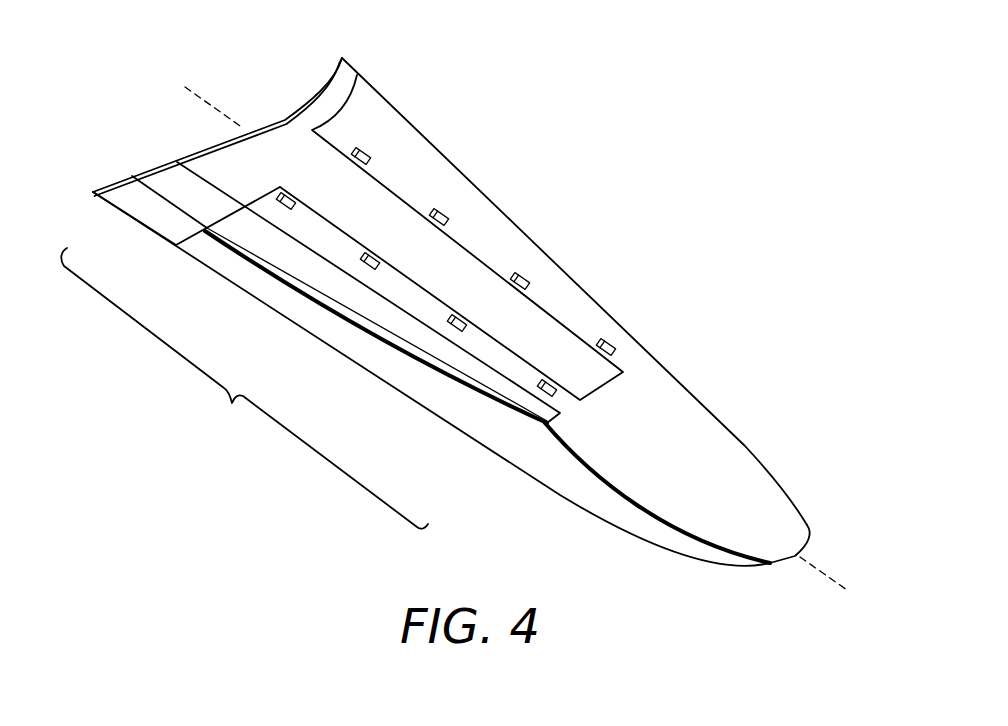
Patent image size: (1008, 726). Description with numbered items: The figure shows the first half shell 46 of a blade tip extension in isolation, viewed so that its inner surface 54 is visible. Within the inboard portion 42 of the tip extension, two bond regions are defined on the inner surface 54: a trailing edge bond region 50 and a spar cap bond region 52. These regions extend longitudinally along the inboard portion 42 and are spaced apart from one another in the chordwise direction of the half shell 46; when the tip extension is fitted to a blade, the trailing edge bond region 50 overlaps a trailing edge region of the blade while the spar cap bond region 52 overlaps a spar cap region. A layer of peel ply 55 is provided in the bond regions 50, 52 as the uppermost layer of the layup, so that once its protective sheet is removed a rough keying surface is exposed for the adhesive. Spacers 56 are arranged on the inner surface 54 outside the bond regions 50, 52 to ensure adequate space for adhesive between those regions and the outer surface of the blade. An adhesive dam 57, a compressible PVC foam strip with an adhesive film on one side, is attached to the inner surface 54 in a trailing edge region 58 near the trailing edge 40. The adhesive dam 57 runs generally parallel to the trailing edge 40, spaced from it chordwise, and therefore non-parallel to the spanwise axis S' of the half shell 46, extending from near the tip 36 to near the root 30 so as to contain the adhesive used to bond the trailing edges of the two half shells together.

The root 30 is at (285, 112).
The tip 36 is at (742, 565).
The trailing edge 40 is at (126, 214).
The inboard portion 42 is at (244, 388).
The first half shell 46 is at (570, 175).
The trailing edge bond region 50 is at (293, 263).
The spar cap bond region 52 is at (379, 205).
The inner surface 54 is at (220, 168).
The peel ply layer 55 is at (179, 157).
The spacers 56 is at (362, 150).
The adhesive dam 57 is at (632, 507).
The trailing edge region 58 is at (582, 486).
The spanwise axis S' is at (831, 557).